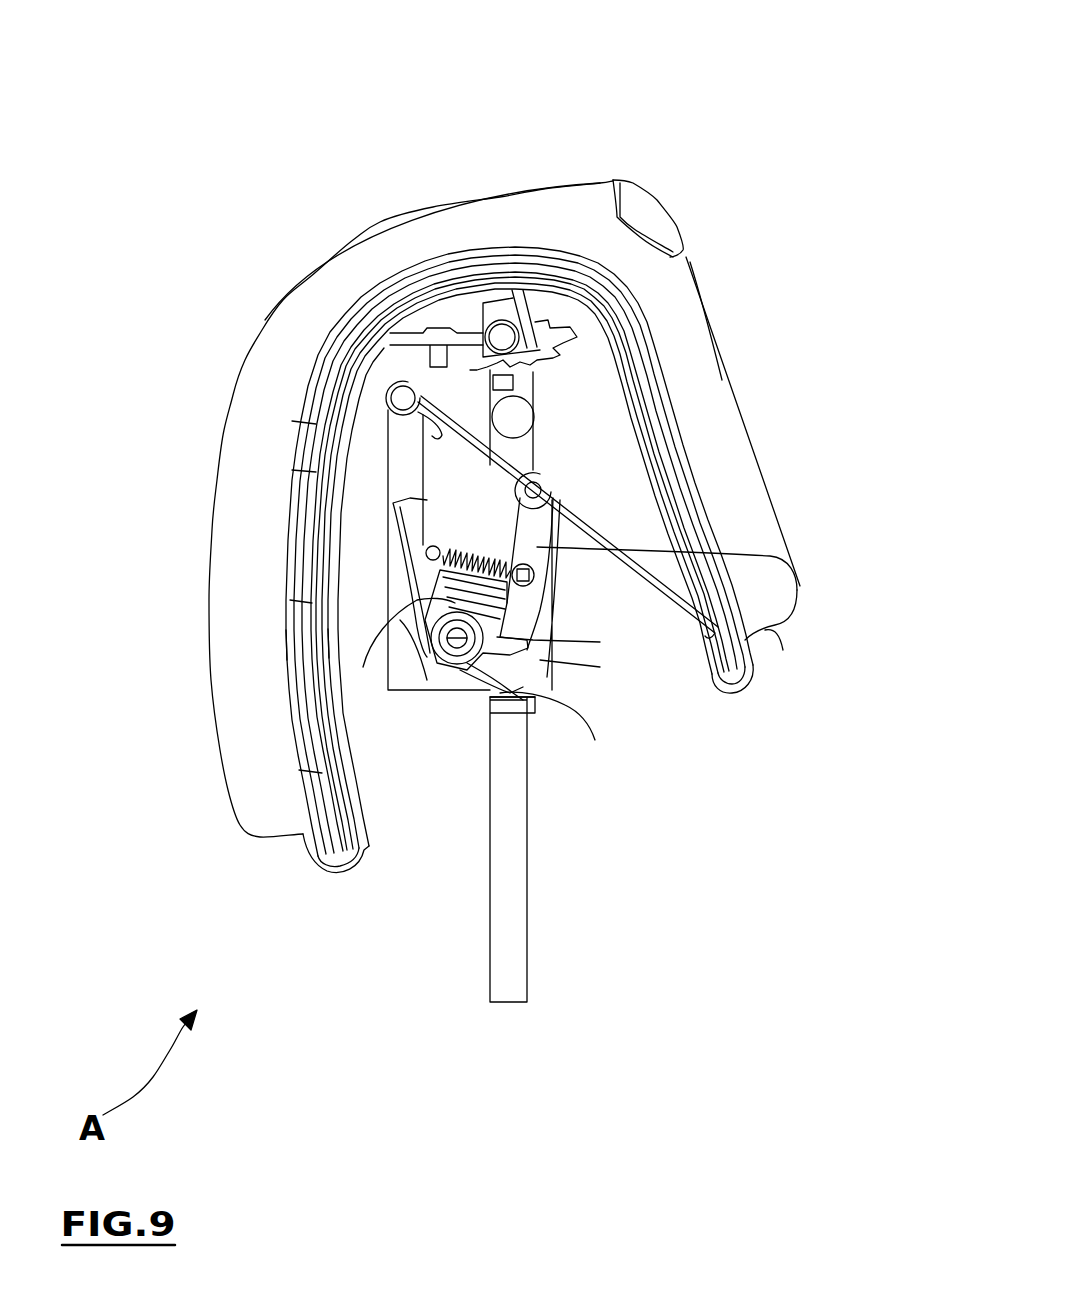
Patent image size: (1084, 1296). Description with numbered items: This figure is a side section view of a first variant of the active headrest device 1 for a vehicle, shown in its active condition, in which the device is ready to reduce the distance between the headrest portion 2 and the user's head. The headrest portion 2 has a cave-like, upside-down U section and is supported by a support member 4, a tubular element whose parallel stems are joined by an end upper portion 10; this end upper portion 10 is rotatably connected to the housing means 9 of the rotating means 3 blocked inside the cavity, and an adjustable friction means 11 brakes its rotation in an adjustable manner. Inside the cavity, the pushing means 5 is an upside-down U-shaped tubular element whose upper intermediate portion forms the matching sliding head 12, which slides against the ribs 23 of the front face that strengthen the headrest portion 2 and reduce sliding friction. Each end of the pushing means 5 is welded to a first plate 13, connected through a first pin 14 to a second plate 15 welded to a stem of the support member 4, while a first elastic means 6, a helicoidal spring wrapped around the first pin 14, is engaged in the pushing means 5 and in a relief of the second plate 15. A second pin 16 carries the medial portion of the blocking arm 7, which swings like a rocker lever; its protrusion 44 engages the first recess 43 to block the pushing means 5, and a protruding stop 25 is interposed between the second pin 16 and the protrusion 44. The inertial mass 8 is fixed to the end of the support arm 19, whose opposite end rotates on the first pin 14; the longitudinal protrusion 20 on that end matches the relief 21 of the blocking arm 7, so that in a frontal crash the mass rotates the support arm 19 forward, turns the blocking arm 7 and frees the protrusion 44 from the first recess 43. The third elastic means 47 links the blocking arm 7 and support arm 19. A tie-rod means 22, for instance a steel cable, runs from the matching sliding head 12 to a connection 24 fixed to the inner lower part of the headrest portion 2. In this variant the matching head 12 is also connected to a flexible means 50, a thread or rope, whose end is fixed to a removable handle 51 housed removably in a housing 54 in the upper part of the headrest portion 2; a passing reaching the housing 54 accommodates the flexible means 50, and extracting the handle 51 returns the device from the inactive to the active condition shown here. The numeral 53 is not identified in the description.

The active headrest device 1 is at (249, 109).
The headrest portion 2 is at (371, 222).
The rotating means 3 is at (537, 318).
The support member 4 is at (510, 978).
The pushing means 5 is at (387, 483).
The first elastic means 6 is at (537, 663).
The blocking arm 7 is at (785, 560).
The inertial mass 8 is at (530, 390).
The housing means 9 is at (508, 310).
The end upper portion 10 is at (503, 337).
The adjustable friction means 11 is at (465, 330).
The matching sliding head 12 is at (403, 398).
The first plate 13 is at (447, 690).
The first pin 14 is at (442, 677).
The second plate 15 is at (578, 672).
The second pin 16 is at (536, 418).
The support arm 19 is at (552, 490).
The longitudinal protrusion 20 is at (475, 370).
The relief 21 is at (550, 317).
The tie-rod means 22 is at (387, 447).
The ribs 23 is at (490, 697).
The connection 24 is at (778, 632).
The protruding stop 25 is at (760, 628).
The first recess 43 is at (363, 667).
The protrusion 44 is at (565, 608).
The third elastic means 47 is at (418, 512).
The flexible means 50 is at (697, 277).
The removable handle 51 is at (677, 253).
The knob rod 53 is at (687, 260).
The housing 54 is at (650, 203).